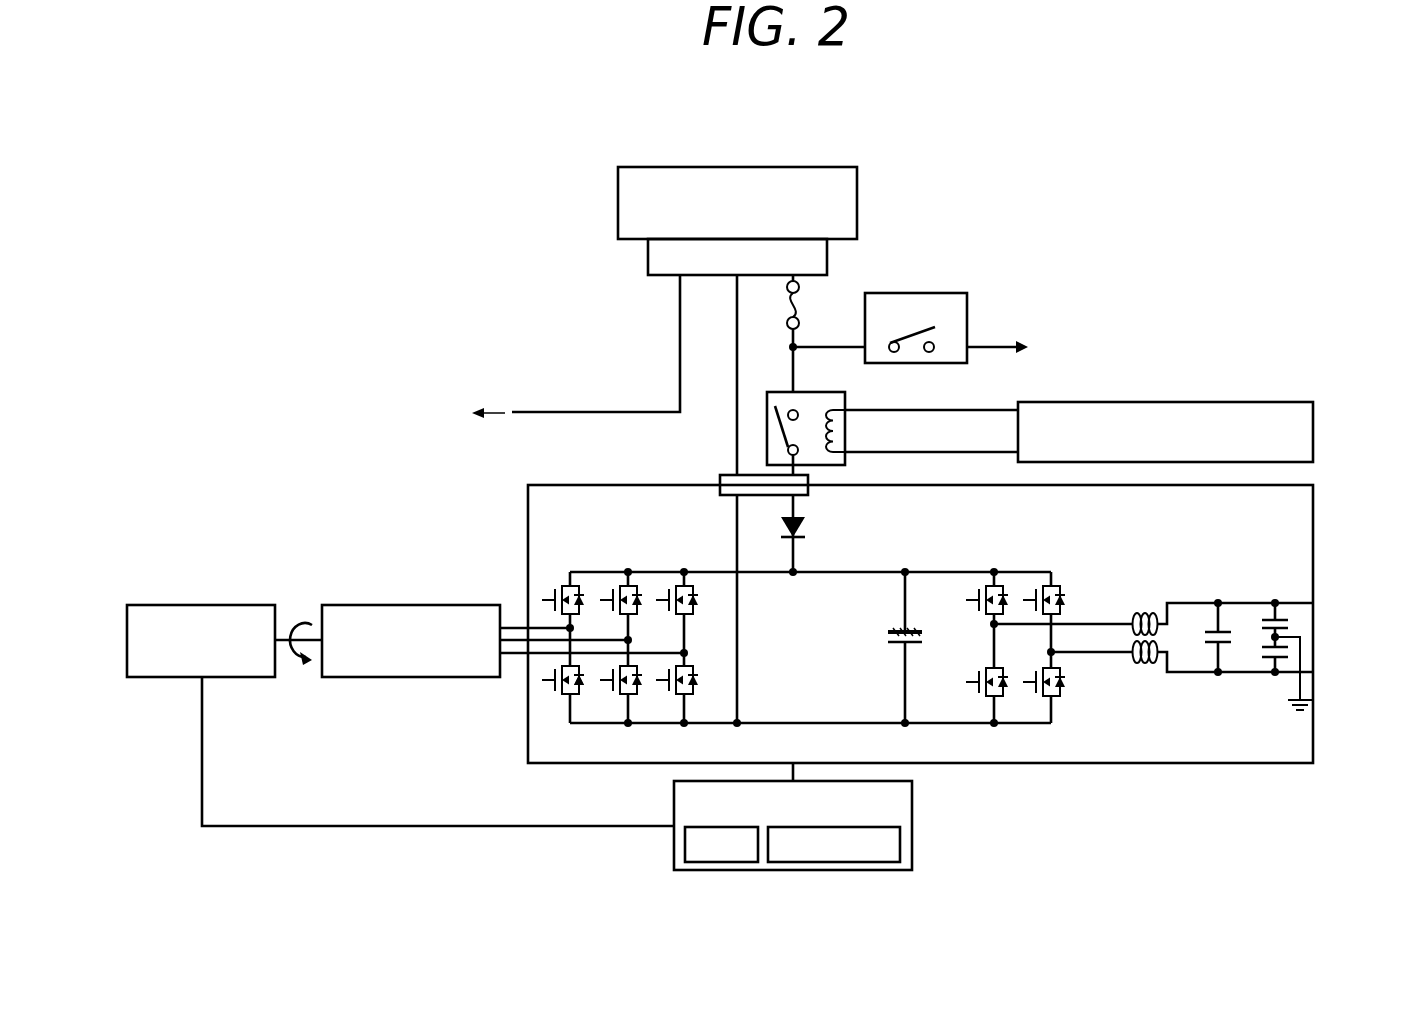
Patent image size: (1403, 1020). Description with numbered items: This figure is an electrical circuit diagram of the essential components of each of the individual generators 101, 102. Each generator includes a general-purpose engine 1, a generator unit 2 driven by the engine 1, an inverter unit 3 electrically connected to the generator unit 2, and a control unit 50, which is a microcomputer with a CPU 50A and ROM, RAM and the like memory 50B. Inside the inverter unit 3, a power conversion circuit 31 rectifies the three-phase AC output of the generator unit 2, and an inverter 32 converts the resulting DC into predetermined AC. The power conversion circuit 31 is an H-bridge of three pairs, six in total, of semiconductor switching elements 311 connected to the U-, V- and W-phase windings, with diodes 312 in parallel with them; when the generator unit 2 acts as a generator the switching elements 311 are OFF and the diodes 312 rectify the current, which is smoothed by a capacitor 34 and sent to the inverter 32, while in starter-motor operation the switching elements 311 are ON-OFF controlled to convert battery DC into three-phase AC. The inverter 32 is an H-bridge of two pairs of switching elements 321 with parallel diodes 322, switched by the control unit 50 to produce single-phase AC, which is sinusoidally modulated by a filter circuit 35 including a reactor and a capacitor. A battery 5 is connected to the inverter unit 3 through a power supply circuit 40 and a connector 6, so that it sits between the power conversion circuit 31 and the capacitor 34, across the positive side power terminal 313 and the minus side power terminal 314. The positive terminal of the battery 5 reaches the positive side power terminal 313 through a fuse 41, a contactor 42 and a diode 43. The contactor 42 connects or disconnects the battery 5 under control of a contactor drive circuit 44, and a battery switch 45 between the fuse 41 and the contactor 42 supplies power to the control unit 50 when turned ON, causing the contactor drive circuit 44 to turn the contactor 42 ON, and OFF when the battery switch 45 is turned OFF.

The general-purpose engine 1 is at (250, 605).
The generator unit 2 is at (460, 605).
The inverter unit 3 is at (1200, 765).
The battery 5 is at (857, 195).
The connector 6 is at (648, 257).
The power conversion circuit 31 is at (599, 691).
The inverter 32 is at (1030, 692).
The capacitor 34 is at (893, 646).
The filter circuit 35 is at (1257, 752).
The power supply circuit 40 is at (706, 358).
The fuse 41 is at (803, 302).
The contactor 42 is at (767, 425).
The diode 43 is at (805, 530).
The contactor drive circuit 44 is at (1313, 423).
The battery switch 45 is at (955, 293).
The control unit 50 is at (825, 843).
The CPU 50A is at (733, 862).
The memory 50B is at (870, 862).
The generator 101 is at (1227, 200).
The generator 102 is at (1138, 222).
The semiconductor switching element 311 is at (565, 700).
The diode 312 is at (582, 688).
The positive side power terminal 313 is at (797, 577).
The minus side power terminal 314 is at (740, 722).
The semiconductor switching element 321 is at (988, 695).
The diode 322 is at (1008, 695).